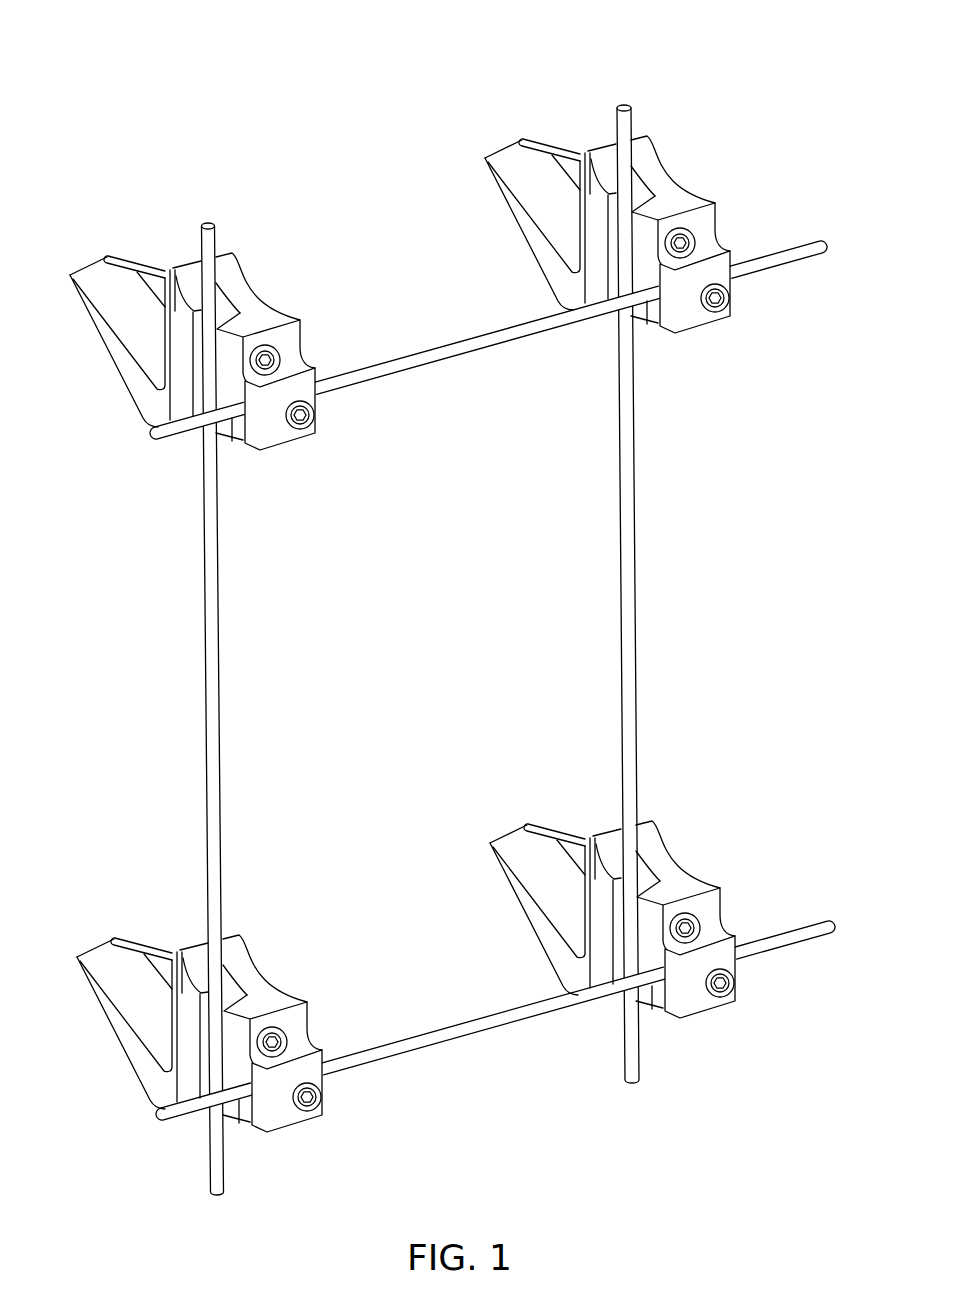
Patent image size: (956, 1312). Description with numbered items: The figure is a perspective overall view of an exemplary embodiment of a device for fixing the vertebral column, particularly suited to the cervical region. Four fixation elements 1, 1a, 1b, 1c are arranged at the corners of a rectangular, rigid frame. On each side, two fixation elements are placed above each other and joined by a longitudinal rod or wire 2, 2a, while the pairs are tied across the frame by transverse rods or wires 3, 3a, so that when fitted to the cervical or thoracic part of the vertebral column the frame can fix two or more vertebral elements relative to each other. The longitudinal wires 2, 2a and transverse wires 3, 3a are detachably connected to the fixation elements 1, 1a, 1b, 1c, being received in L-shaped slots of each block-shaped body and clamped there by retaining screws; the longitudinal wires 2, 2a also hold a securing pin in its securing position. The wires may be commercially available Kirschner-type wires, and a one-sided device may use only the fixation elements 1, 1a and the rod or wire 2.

The fixation element 1 is at (277, 258).
The fixation element 1a is at (275, 937).
The fixation element 1b is at (697, 112).
The fixation element 1c is at (697, 818).
The longitudinal rod or wire 2 is at (222, 640).
The longitudinal rod or wire 2a is at (633, 605).
The transverse rod or wire 3 is at (442, 357).
The transverse rod or wire 3a is at (453, 1033).